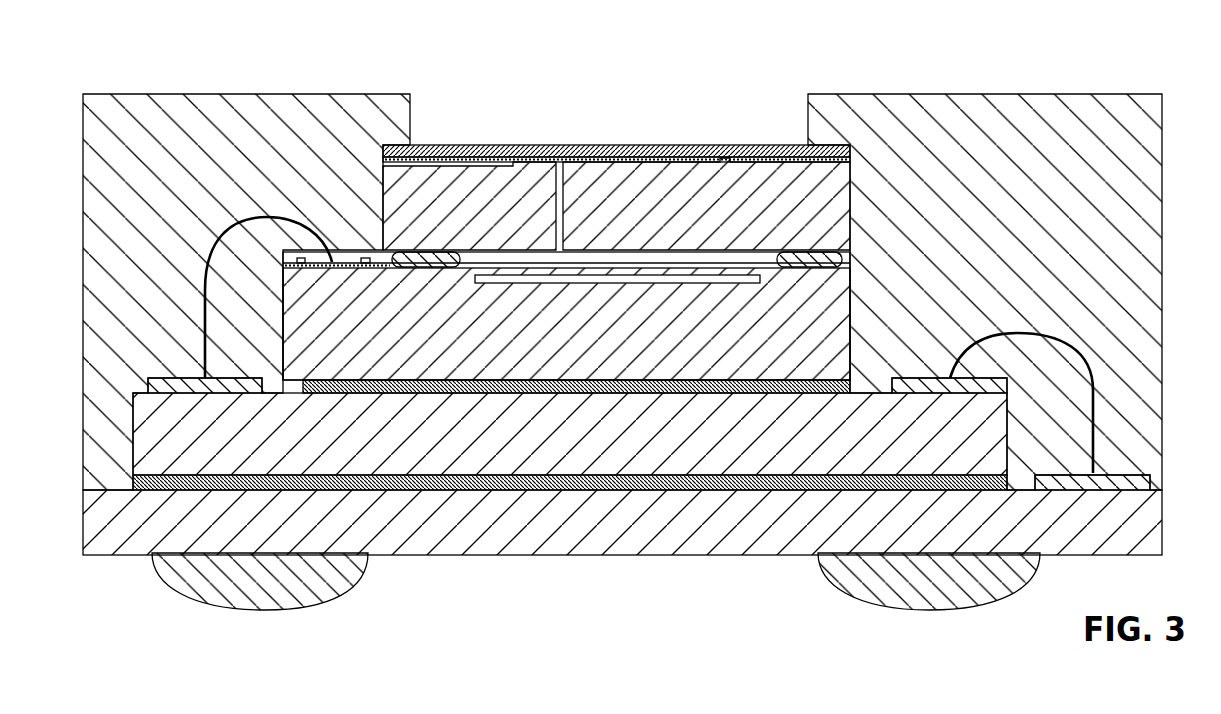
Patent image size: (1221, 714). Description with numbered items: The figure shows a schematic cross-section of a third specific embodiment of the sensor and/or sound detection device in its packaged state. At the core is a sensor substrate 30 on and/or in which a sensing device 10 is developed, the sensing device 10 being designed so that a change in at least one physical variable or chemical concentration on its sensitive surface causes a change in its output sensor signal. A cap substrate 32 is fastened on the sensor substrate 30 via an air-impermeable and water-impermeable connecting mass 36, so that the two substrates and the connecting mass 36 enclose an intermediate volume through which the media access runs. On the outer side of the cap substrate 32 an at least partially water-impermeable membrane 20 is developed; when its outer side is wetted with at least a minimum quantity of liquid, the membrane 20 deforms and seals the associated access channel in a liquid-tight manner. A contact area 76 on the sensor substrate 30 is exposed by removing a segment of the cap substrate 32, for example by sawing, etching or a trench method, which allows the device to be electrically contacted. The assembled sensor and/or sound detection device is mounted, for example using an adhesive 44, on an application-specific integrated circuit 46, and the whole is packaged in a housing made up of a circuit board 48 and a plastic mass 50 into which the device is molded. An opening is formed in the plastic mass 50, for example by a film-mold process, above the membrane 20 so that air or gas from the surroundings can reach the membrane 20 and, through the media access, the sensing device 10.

The sensing device 10 is at (595, 252).
The water-impermeable membrane 20 is at (530, 147).
The sensor substrate 30 is at (693, 304).
The cap substrate 32 is at (468, 197).
The connecting mass 36 is at (805, 253).
The adhesive 44 is at (530, 483).
The application-specific integrated circuit 46 is at (610, 425).
The circuit board 48 is at (435, 533).
The plastic mass 50 is at (202, 138).
The contact area 76 is at (347, 263).